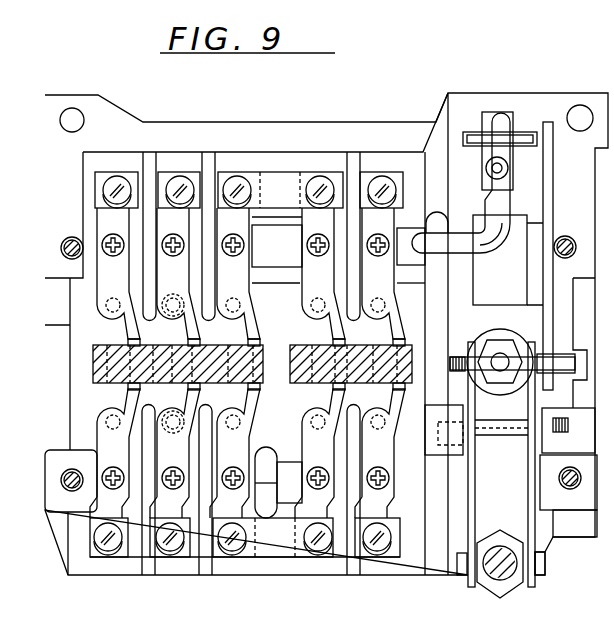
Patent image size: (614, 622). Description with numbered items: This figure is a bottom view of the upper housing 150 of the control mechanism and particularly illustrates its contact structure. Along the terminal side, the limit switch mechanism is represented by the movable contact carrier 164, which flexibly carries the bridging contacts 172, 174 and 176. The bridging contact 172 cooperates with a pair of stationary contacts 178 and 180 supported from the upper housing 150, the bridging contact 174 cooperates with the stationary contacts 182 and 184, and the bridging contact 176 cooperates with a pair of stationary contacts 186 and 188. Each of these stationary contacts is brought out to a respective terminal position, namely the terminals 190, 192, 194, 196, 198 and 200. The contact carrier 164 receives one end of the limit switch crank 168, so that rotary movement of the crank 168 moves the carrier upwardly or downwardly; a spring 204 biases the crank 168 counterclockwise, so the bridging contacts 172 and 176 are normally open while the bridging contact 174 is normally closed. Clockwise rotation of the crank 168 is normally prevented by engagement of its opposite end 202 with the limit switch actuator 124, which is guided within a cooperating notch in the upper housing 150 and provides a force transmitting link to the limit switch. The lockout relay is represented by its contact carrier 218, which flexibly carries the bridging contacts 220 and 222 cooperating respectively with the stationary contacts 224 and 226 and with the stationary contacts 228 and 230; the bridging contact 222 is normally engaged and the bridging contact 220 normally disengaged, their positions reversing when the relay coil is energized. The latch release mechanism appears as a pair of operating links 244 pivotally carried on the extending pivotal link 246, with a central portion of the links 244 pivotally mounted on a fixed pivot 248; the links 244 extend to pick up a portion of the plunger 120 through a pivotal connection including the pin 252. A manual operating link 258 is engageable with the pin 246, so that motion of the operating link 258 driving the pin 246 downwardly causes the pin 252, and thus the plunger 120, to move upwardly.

The plunger 120 is at (503, 578).
The limit switch actuator 124 is at (479, 130).
The upper housing 150 is at (393, 102).
The contact carrier 164 is at (93, 365).
The limit switch crank 168 is at (482, 243).
The bridging contact 172 is at (130, 325).
The bridging contact 174 is at (186, 325).
The bridging contact 176 is at (248, 325).
The stationary contact 178 is at (107, 280).
The stationary contact 180 is at (100, 427).
The stationary contact 182 is at (165, 279).
The stationary contact 184 is at (187, 423).
The stationary contact 186 is at (248, 290).
The stationary contact 188 is at (255, 427).
The terminal position 190 is at (118, 190).
The terminal position 192 is at (115, 548).
The terminal 194 is at (180, 190).
The terminal 196 is at (173, 548).
The terminal position 198 is at (237, 190).
The terminal position 200 is at (237, 548).
The opposite end of crank 202 is at (516, 104).
The spring 204 is at (504, 178).
The contact carrier 218 is at (424, 342).
The bridging contact 220 is at (314, 336).
The bridging contact 222 is at (392, 322).
The stationary contact 224 is at (312, 440).
The stationary contact 226 is at (306, 260).
The stationary contact 228 is at (390, 553).
The stationary contact 230 is at (405, 165).
The operating link 244 is at (531, 495).
The pivotal link 246 is at (498, 362).
The fixed pivot 248 is at (500, 430).
The pin 252 is at (545, 563).
The operating link 258 is at (552, 215).